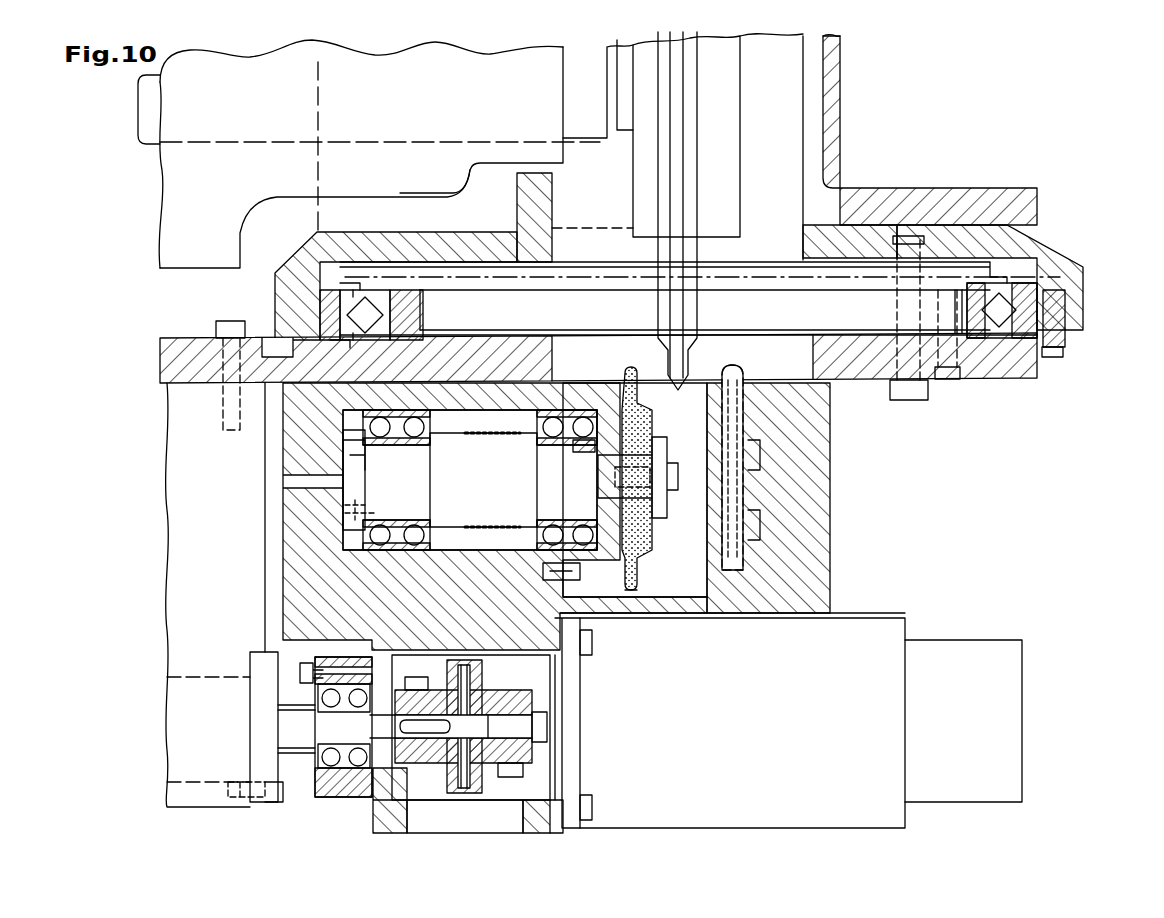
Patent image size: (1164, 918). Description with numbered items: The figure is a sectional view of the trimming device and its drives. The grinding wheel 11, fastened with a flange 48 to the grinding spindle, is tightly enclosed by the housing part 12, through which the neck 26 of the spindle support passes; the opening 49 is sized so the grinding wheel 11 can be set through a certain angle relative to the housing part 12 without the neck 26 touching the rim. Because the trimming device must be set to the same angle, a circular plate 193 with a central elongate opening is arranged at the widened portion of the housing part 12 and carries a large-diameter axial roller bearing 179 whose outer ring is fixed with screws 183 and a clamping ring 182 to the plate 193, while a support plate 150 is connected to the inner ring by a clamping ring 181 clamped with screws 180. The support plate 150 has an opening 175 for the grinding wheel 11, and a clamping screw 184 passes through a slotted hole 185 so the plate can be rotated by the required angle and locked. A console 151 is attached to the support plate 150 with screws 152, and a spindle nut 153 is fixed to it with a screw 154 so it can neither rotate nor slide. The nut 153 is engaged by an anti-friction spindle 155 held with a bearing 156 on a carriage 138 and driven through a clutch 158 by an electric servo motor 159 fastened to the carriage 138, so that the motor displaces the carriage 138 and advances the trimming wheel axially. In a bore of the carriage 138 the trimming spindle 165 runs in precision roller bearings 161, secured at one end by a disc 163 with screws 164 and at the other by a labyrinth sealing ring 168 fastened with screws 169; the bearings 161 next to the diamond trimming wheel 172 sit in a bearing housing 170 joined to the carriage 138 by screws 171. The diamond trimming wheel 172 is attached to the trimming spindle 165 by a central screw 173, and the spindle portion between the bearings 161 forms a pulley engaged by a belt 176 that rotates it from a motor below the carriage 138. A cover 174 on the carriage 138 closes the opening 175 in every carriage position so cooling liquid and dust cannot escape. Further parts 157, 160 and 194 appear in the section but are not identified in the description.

The grinding wheel 11 is at (686, 116).
The housing part 12 is at (838, 100).
The neck 26 is at (578, 118).
The flange 48 is at (630, 103).
The opening 49 is at (556, 172).
The carriage 138 is at (300, 575).
The support plate 150 is at (1020, 378).
The console 151 is at (190, 812).
The screws 152 is at (222, 321).
The spindle nut 153 is at (252, 662).
The screw 154 is at (275, 802).
The anti-friction spindle 155 is at (275, 730).
The bearing 156 is at (355, 795).
The screw 157 is at (298, 672).
The clutch 158 is at (560, 750).
The electric servo motor 159 is at (850, 640).
The bolt 160 is at (594, 806).
The precision roller bearings 161 is at (575, 510).
The disc 163 is at (343, 460).
The screws 164 is at (345, 515).
The trimming spindle 165 is at (450, 492).
The labyrinth sealing ring 168 is at (645, 566).
The screws 169 is at (580, 455).
The bearing housing 170 is at (563, 383).
The screws 171 is at (548, 580).
The diamond trimming wheel 172 is at (652, 412).
The central screw 173 is at (676, 492).
The cover 174 is at (810, 528).
The opening 175 is at (765, 330).
The belt 176 is at (480, 430).
The axial roller bearing 179 is at (975, 340).
The screws 180 is at (950, 382).
The clamping ring 181 is at (975, 283).
The clamping ring 182 is at (1068, 338).
The screws 183 is at (1062, 360).
The clamping screw 184 is at (916, 405).
The slotted hole 185 is at (888, 392).
The circular plate 193 is at (295, 290).
The spacer 194 is at (800, 232).